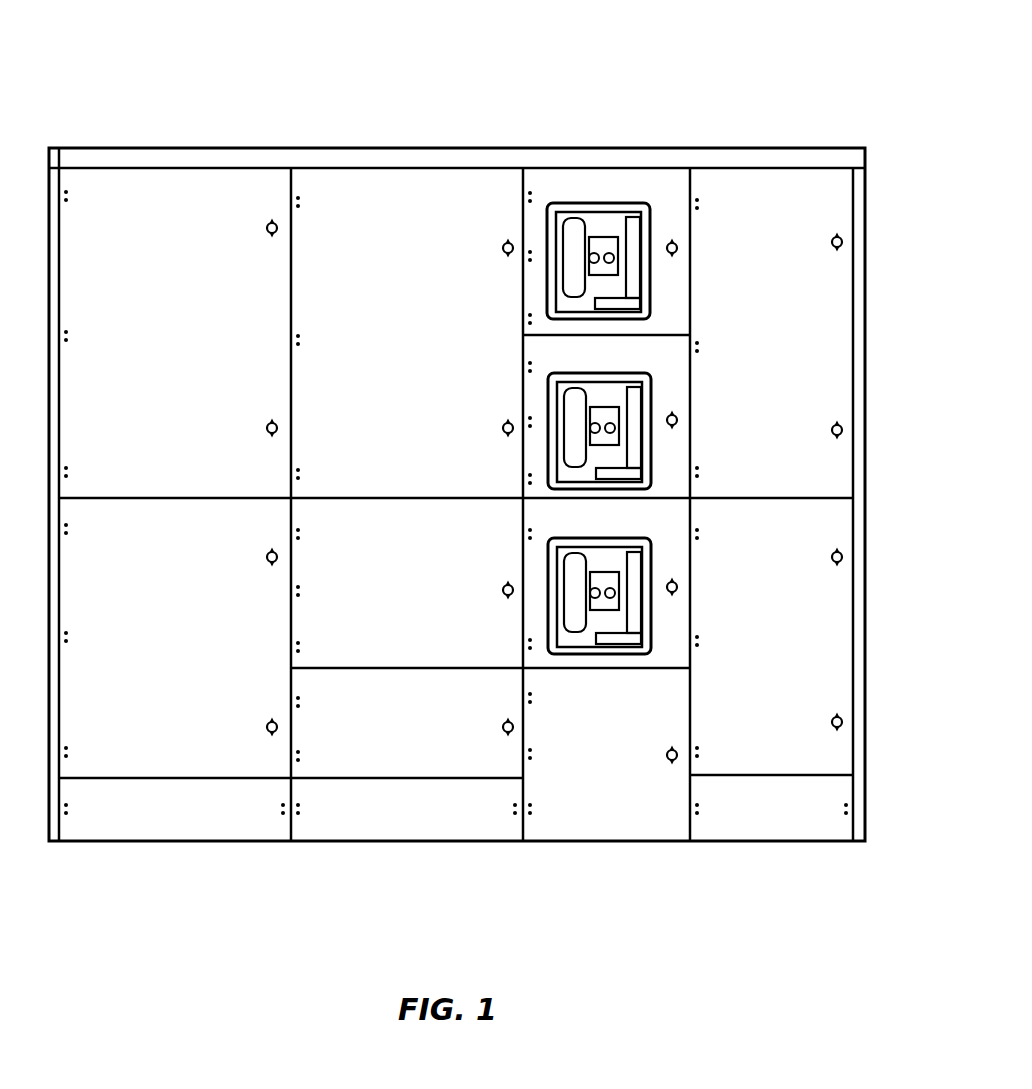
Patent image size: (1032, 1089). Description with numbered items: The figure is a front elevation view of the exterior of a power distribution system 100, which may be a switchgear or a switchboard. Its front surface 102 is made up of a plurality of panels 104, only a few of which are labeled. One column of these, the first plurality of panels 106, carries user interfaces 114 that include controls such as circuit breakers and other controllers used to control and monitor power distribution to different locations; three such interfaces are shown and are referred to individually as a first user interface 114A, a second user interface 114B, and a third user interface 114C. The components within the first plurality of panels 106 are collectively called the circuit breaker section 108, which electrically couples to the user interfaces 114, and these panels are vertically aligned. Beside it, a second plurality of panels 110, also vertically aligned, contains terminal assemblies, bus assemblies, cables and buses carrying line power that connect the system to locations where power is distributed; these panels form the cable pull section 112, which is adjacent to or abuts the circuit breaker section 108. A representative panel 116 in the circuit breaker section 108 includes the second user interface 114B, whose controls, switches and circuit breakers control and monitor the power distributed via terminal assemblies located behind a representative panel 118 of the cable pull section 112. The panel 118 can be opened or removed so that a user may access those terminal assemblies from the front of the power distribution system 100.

The power distribution system 100 is at (705, 78).
The front surface 102 is at (152, 210).
The panels 104 is at (192, 349).
The first plurality of panels 106 is at (581, 166).
The circuit breaker section 108 is at (612, 843).
The second plurality of panels 110 is at (774, 166).
The cable pull section 112 is at (775, 778).
The user interfaces 114 is at (597, 200).
The first user interface 114A is at (650, 217).
The second user interface 114B is at (650, 466).
The third user interface 114C is at (650, 624).
The panel 116 is at (672, 370).
The panel 118 is at (818, 368).